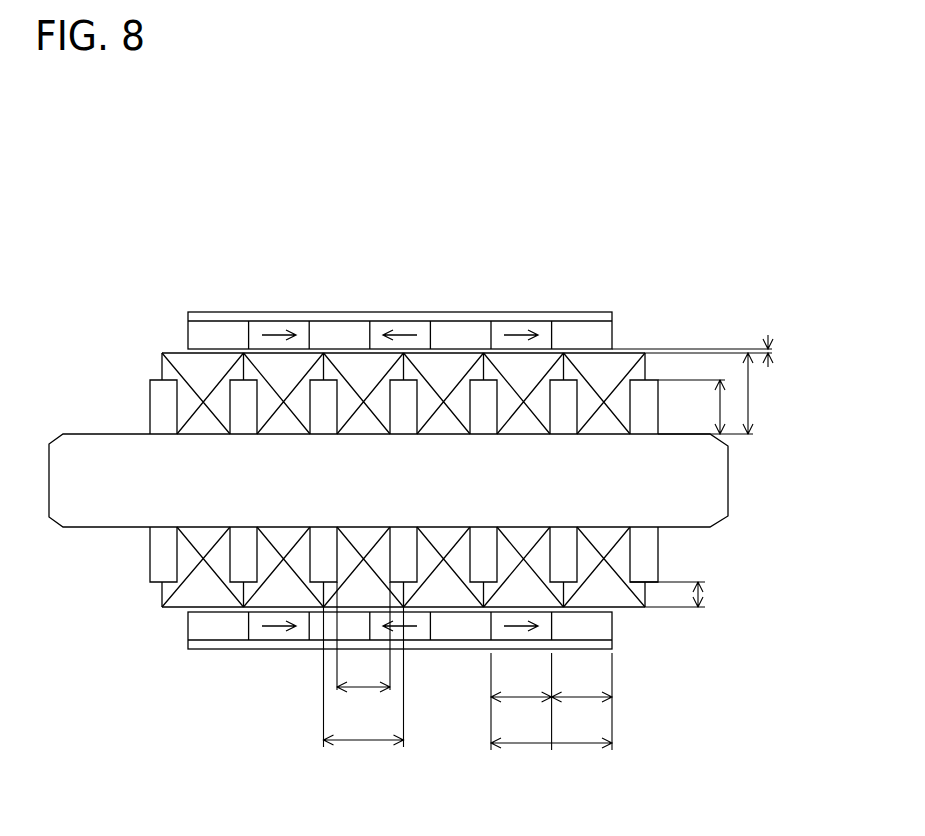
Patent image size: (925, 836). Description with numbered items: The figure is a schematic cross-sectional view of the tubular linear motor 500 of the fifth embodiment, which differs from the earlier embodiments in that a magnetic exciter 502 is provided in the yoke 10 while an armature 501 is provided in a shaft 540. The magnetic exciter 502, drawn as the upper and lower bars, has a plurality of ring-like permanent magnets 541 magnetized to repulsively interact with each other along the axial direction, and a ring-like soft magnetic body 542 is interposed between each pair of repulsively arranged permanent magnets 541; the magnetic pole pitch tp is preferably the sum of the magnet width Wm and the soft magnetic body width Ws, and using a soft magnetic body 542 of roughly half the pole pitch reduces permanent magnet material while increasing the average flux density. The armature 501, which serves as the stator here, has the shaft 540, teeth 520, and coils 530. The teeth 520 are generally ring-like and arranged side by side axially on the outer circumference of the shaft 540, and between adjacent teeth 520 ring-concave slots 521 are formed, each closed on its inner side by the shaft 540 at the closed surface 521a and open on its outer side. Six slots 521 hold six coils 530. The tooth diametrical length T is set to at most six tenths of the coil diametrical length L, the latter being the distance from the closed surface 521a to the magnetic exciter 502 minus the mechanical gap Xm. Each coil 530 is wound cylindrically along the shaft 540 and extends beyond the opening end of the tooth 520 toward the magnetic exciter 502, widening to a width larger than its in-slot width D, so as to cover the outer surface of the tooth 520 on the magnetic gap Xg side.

The tubular linear motor 500 is at (148, 173).
The yoke 10 is at (405, 312).
The armature 501 is at (622, 350).
The magnetic exciter 502 is at (223, 319).
The teeth 520 is at (158, 397).
The slot 521 is at (625, 557).
The closed surface of the slot 521a is at (633, 548).
The coil 530 is at (198, 370).
The shaft 540 is at (90, 450).
The permanent magnet 541 is at (378, 328).
The soft magnetic body 542 is at (587, 327).